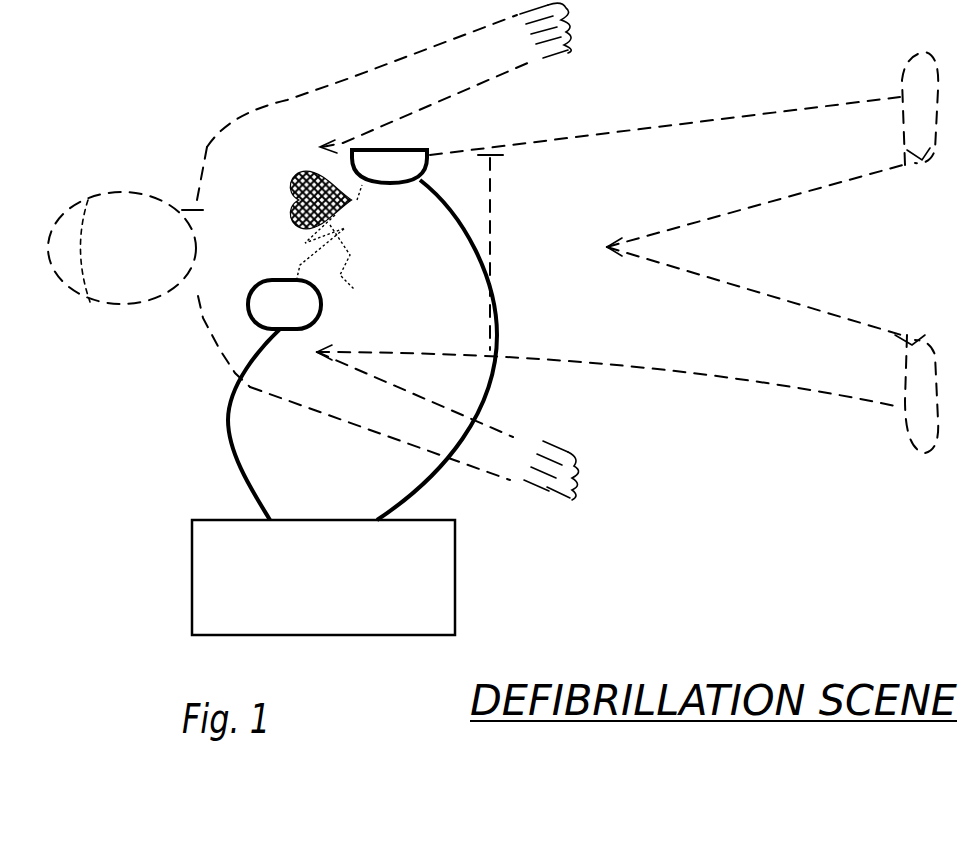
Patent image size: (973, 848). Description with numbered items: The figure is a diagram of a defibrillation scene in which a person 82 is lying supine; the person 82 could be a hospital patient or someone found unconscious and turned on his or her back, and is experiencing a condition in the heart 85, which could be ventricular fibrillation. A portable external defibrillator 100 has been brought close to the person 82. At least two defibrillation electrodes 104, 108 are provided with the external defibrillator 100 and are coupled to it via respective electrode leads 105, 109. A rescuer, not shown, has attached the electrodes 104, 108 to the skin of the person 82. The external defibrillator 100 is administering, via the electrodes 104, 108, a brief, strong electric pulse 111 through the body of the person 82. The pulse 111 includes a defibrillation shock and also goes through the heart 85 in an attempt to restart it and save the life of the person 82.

The person 82 is at (204, 150).
The heart 85 is at (300, 170).
The external defibrillator 100 is at (346, 559).
The defibrillation electrode 104 is at (247, 312).
The electrode lead 105 is at (216, 434).
The defibrillation electrode 108 is at (403, 141).
The electrode lead 109 is at (406, 490).
The electric pulse 111 is at (330, 242).